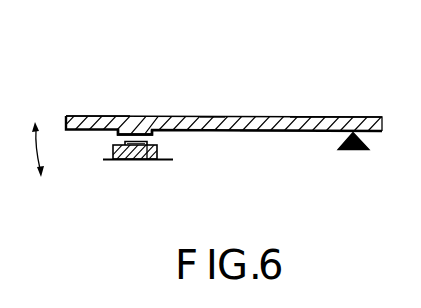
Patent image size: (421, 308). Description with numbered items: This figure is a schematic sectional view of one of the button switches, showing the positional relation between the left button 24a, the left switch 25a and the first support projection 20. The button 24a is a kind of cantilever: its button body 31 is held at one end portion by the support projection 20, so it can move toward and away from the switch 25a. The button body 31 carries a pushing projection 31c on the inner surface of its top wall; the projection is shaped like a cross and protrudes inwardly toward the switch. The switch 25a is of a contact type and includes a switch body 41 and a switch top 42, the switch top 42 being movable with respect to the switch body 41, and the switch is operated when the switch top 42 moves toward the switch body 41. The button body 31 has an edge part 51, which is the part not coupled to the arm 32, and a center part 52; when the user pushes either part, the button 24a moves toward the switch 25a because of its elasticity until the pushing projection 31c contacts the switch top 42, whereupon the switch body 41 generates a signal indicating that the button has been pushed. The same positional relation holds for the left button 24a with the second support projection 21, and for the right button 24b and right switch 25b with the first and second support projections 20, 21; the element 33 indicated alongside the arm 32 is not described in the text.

The first support projection 20 is at (370, 170).
The second support projection 21 is at (353, 152).
The left button 24a is at (246, 72).
The right button 24b is at (210, 114).
The left switch 25a is at (154, 198).
The right switch 25b is at (127, 160).
The button body 31 is at (177, 119).
The pushing projection 31c is at (135, 128).
The arm 32 is at (336, 90).
The holding member 33 is at (308, 120).
The switch body 41 is at (113, 152).
The switch top 42 is at (146, 160).
The edge part 51 is at (97, 120).
The center part 52 is at (268, 132).